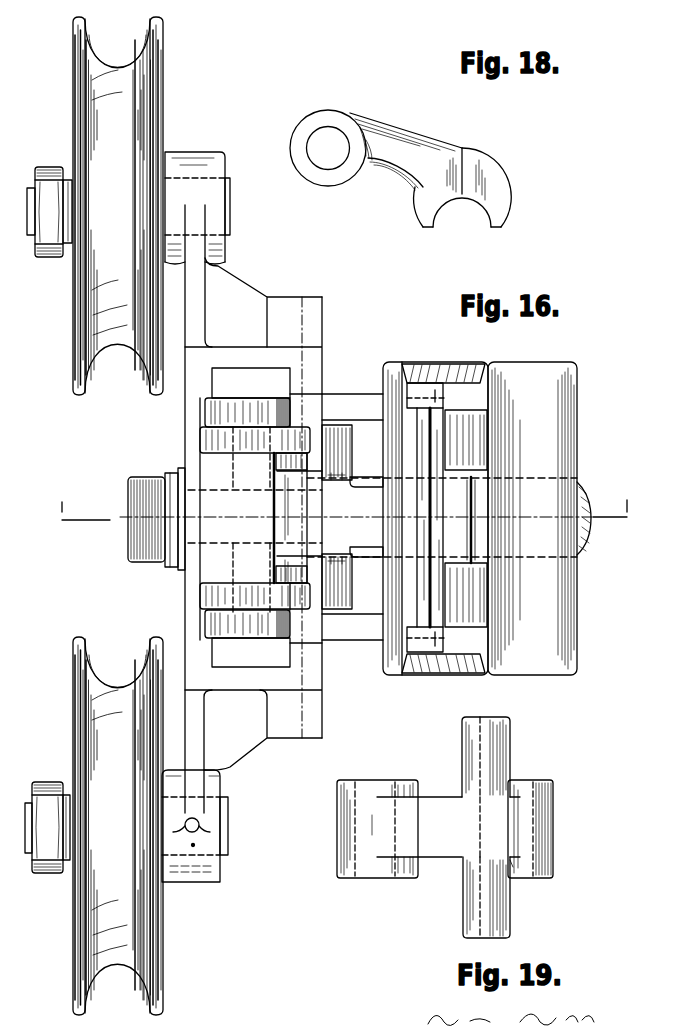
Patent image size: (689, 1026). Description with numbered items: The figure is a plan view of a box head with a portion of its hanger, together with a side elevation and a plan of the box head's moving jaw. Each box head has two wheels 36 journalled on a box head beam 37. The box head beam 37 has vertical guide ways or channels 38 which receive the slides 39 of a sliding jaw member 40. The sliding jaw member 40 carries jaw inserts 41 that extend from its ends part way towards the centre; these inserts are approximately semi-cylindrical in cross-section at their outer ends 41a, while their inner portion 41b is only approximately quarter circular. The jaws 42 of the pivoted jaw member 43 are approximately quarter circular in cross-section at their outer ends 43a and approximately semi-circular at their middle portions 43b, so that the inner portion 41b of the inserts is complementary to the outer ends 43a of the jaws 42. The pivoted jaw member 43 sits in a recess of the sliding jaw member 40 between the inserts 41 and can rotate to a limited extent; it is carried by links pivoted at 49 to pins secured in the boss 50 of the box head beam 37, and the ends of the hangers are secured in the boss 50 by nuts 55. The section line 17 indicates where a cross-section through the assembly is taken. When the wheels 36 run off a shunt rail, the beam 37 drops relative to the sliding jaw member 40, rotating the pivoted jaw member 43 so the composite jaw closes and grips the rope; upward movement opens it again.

In FIG. 16, the section line 17- 17 is at (342, 520).
In FIG. 16, the wheels 36 is at (78, 116).
In FIG. 16, the box head beam 37 is at (193, 598).
In FIG. 16, the vertical guide ways or channels 38 is at (283, 372).
In FIG. 16, the slides 39 is at (228, 383).
In FIG. 16, the sliding jaw member 40 is at (340, 404).
In FIG. 16, the jaw inserts 41 is at (421, 375).
In FIG. 16, the outer ends of jaw inserts 41a is at (442, 392).
In FIG. 16, the inner portion of jaw inserts 41b is at (473, 432).
In FIG. 16, the jaws 42 is at (437, 508).
In FIG. 18, the jaws 42 is at (498, 202).
In FIG. 19, the jaws 42 is at (512, 867).
In FIG. 16, the pivoted jaw member 43 is at (368, 542).
In FIG. 18, the pivoted jaw member 43 is at (395, 132).
In FIG. 19, the pivoted jaw member 43 is at (436, 807).
In FIG. 19, the outer ends of jaws 43a is at (503, 748).
In FIG. 19, the middle portions of jaws 43b is at (553, 827).
In FIG. 16, the pivot 49 is at (247, 553).
In FIG. 16, the boss 50 is at (218, 465).
In FIG. 16, the nuts 55 is at (130, 510).